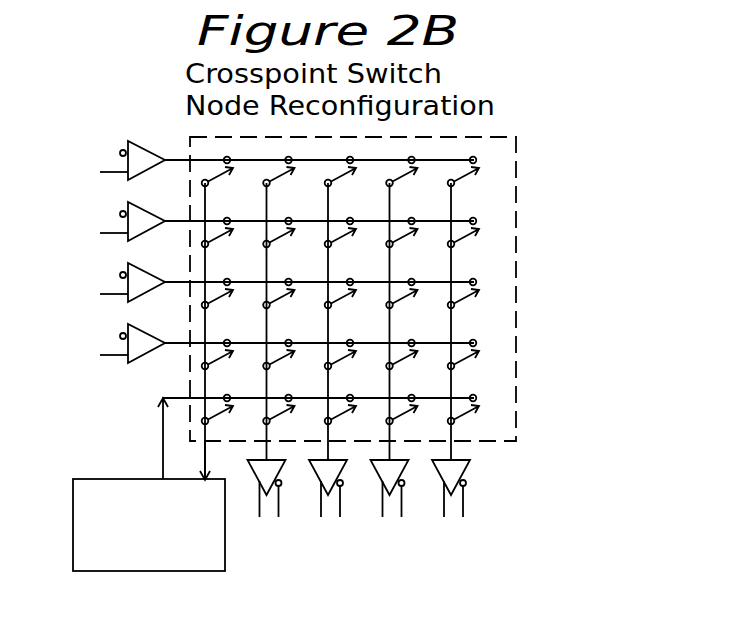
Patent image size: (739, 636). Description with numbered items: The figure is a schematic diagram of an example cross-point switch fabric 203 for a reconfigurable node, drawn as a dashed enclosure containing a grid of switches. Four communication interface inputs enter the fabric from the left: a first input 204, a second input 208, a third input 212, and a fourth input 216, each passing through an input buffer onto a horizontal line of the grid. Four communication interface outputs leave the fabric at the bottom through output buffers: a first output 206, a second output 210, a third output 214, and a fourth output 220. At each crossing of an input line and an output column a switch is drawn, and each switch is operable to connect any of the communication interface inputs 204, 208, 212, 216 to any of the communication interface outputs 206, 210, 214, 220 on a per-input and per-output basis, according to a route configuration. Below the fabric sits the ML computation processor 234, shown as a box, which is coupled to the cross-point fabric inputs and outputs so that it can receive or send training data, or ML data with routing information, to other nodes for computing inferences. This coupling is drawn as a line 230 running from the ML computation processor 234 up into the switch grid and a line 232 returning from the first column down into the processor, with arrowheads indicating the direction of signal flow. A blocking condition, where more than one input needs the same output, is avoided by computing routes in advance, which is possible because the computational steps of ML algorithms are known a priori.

The cross-point switch fabric 203 is at (516, 138).
The communication interface input I1 204 is at (120, 153).
The communication interface input I2 208 is at (120, 214).
The communication interface input I3 212 is at (120, 275).
The communication interface input I4 216 is at (120, 336).
The communication interface output O1 206 is at (261, 520).
The communication interface output O2 210 is at (322, 520).
The communication interface output O3 214 is at (383, 520).
The communication interface output O4 220 is at (448, 520).
The control signal line from ML comp 230 is at (162, 427).
The feedback signal line to ML comp 232 is at (203, 453).
The ML computation processor 234 is at (97, 480).